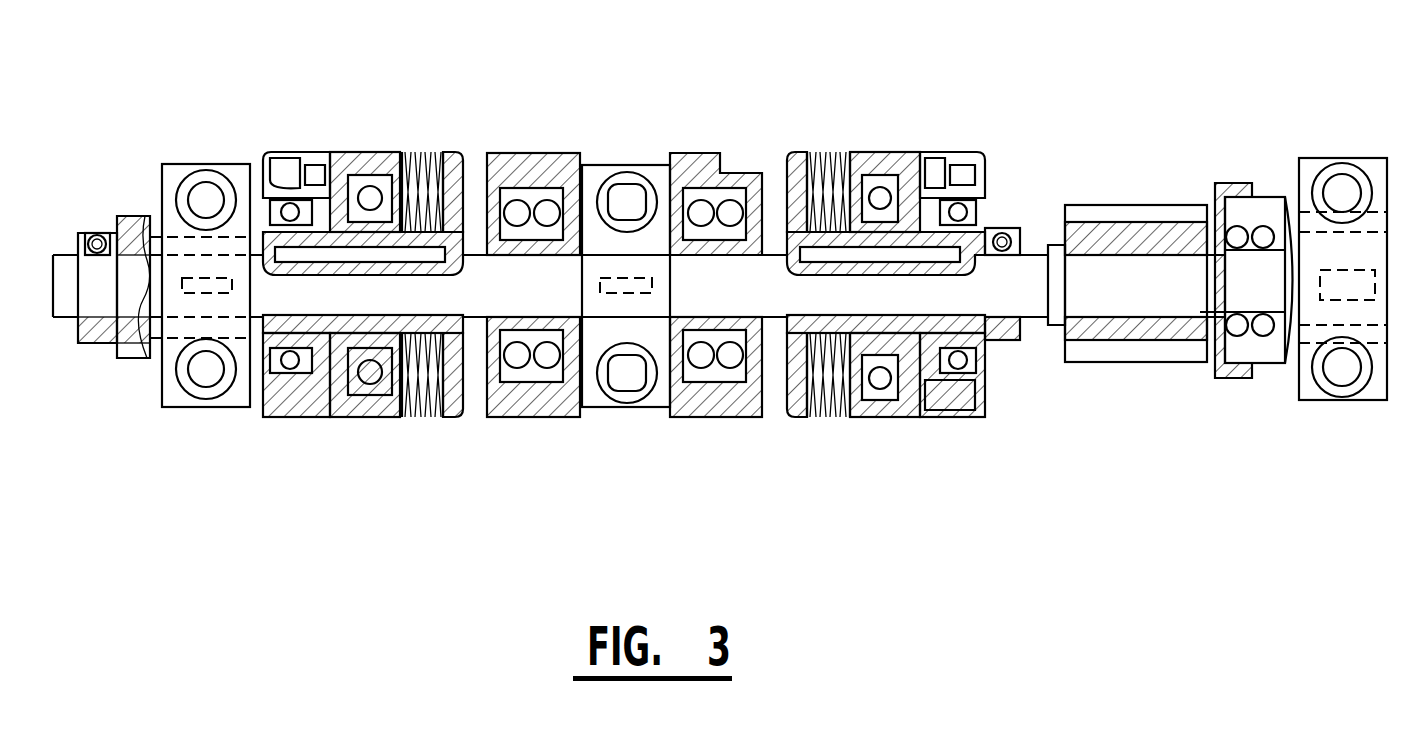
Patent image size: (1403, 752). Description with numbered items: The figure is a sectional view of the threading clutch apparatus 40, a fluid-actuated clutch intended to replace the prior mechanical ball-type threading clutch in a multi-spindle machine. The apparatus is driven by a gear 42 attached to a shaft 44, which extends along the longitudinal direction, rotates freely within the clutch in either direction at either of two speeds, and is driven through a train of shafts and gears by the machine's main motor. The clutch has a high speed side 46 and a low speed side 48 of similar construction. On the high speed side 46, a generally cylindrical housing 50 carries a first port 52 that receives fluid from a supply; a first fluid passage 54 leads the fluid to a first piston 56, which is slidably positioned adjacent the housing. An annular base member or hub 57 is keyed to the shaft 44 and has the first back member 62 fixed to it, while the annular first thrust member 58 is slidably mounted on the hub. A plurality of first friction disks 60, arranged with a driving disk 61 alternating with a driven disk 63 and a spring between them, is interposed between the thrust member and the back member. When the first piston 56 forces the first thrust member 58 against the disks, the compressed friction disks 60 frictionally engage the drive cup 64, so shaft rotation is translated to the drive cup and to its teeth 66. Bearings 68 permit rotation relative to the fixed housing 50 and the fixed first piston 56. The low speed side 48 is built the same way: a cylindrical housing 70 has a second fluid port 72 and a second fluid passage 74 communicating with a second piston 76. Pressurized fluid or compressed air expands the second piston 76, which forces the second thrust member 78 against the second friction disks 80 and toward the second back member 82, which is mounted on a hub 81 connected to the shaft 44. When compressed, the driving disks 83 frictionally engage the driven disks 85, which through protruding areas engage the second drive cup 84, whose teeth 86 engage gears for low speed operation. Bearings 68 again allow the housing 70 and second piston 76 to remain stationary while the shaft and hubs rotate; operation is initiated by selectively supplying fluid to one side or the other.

The threading clutch apparatus 40 is at (668, 85).
The gear 42 is at (1140, 205).
The shaft 44 is at (1040, 320).
The high speed side 46 is at (733, 125).
The low speed side 48 is at (373, 125).
The housing 50 is at (988, 228).
The first port 52 is at (970, 150).
The first fluid passage 54 is at (930, 150).
The first piston 56 is at (905, 420).
The hub 57 is at (1005, 228).
The first thrust member 58 is at (865, 152).
The first friction disks 60 is at (880, 404).
The driving disk 61 is at (830, 418).
The first back member 62 is at (790, 420).
The driven disk 63 is at (820, 418).
The drive cup 64 is at (775, 418).
The teeth 66 is at (685, 418).
The bearings 68 is at (290, 370).
The housing 70 is at (265, 160).
The second fluid port 72 is at (272, 152).
The second fluid passage 74 is at (300, 158).
The second piston 76 is at (340, 158).
The second thrust member 78 is at (368, 385).
The second friction disks 80 is at (445, 405).
The hub 81 is at (258, 340).
The second back member 82 is at (473, 123).
The driving disks 83 is at (405, 405).
The second drive cup 84 is at (460, 405).
The driven disks 85 is at (415, 405).
The teeth 86 is at (570, 418).